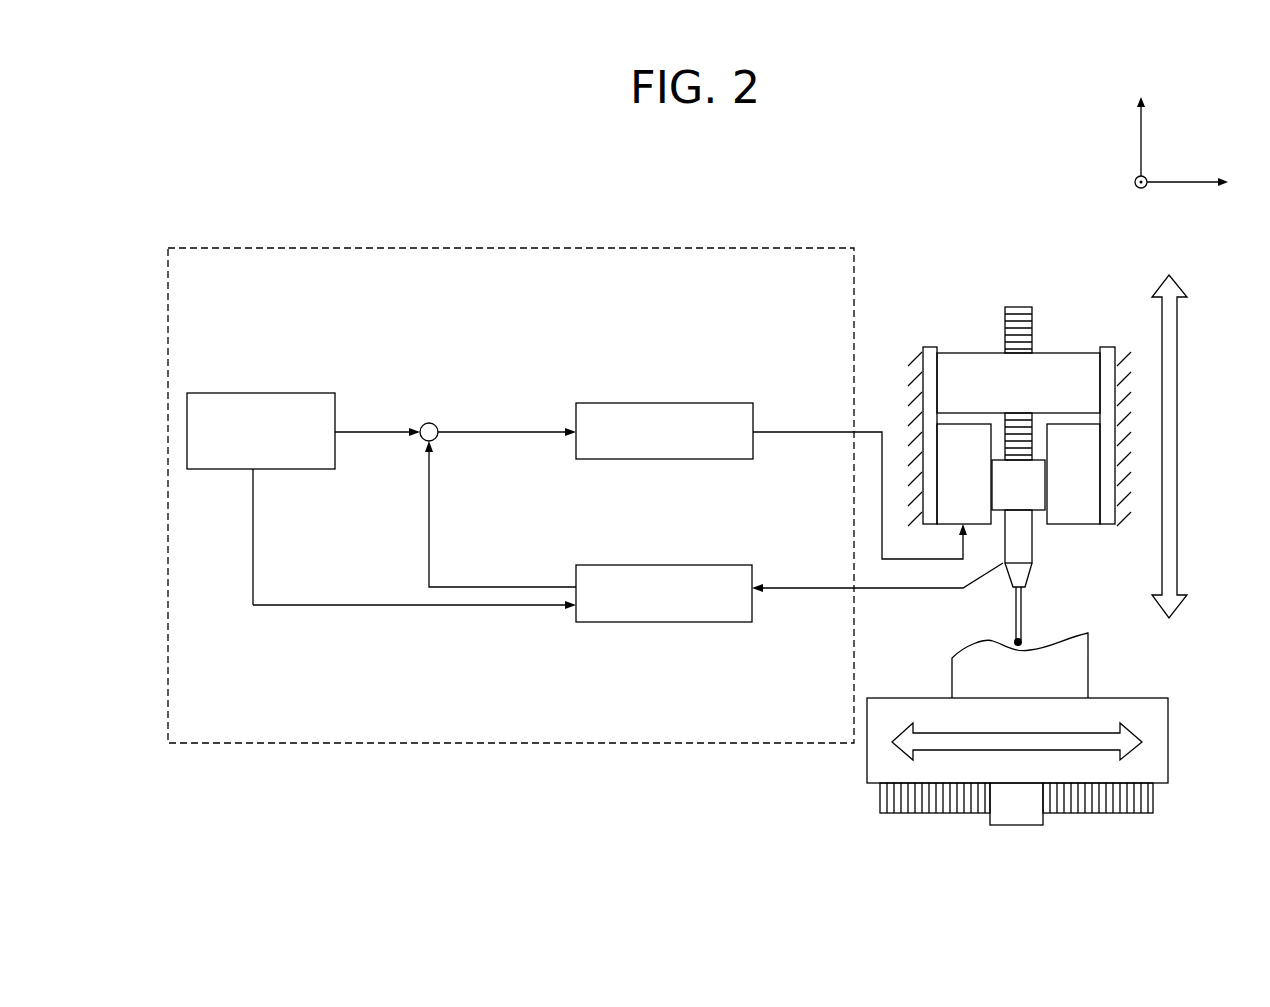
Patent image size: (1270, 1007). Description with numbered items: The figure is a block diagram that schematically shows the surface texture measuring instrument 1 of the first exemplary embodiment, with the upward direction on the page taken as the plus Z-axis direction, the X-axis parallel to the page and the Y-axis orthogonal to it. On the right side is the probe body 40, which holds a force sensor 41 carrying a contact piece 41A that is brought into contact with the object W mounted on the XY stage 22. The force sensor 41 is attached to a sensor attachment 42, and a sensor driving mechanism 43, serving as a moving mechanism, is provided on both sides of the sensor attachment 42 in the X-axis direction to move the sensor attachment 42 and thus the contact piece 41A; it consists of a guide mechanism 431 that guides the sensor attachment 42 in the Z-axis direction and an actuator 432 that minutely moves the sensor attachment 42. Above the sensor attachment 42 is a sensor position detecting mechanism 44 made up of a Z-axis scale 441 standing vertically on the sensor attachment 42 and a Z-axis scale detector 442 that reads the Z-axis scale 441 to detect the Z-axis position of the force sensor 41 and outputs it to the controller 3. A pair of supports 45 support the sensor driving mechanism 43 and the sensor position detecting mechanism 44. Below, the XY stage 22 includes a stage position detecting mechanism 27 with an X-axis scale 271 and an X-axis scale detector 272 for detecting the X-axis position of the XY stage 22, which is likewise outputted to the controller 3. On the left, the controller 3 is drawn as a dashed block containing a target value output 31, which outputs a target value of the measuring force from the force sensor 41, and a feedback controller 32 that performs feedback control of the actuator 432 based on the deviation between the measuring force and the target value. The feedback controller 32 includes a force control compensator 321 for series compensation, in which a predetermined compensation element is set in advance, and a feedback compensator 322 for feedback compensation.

The surface texture measuring instrument 1 is at (886, 163).
The controller 3 is at (723, 248).
The target value output 31 is at (280, 393).
The feedback controller 32 is at (593, 528).
The force control compensator 321 is at (660, 403).
The feedback compensator 322 is at (660, 565).
The XY stage 22 is at (1158, 720).
The stage position detecting mechanism 27 is at (1071, 819).
The X-axis scale 271 is at (1148, 798).
The X-axis scale detector 272 is at (1040, 820).
The probe body 40 is at (1046, 260).
The force sensor 41 is at (1052, 578).
The contact piece 41A is at (1020, 640).
The sensor attachment 42 is at (1033, 500).
The sensor driving mechanism 43 is at (1037, 526).
The guide mechanism 431 is at (1090, 518).
The actuator 432 is at (980, 517).
The sensor position detecting mechanism 44 is at (1018, 350).
The Z-axis scale 441 is at (1013, 307).
The Z-axis scale detector 442 is at (1070, 363).
The supports 45 is at (930, 347).
The object W is at (1020, 665).